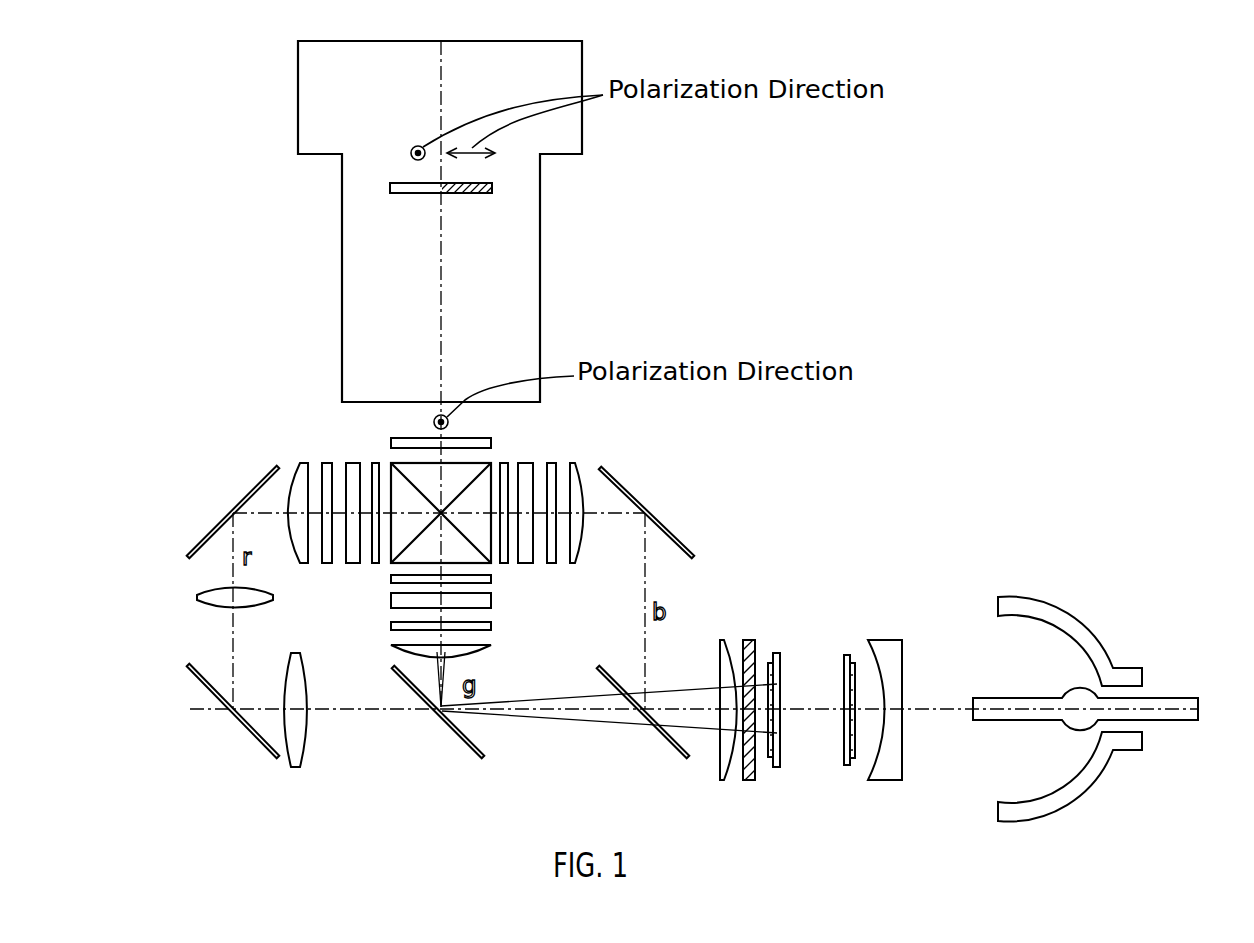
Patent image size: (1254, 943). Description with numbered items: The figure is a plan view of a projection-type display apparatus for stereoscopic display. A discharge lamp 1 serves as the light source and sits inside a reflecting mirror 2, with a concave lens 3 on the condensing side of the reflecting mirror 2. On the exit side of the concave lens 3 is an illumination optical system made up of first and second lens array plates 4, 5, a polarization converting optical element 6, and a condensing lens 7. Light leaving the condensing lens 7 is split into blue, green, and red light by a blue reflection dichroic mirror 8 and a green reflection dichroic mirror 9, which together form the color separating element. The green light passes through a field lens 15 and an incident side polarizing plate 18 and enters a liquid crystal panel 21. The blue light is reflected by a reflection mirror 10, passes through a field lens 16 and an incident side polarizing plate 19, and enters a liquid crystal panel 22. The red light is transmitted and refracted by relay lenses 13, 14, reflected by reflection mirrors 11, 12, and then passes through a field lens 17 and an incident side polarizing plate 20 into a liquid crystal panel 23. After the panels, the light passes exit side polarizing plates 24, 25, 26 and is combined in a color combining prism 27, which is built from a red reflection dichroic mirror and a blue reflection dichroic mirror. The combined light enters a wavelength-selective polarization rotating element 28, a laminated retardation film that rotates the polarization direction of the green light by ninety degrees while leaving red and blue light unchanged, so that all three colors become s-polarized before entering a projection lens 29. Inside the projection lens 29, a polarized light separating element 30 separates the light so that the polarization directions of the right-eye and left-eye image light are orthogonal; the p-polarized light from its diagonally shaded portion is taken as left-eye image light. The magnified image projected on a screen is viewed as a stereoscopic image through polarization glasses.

The discharge lamp 1 is at (1168, 698).
The reflecting mirror 2 is at (1098, 777).
The concave lens 3 is at (904, 764).
The first lens array plate 4 is at (847, 655).
The second lens array plate 5 is at (777, 653).
The polarization converting optical element 6 is at (755, 770).
The condensing lens 7 is at (722, 640).
The blue reflection dichroic mirror 8 is at (667, 742).
The green reflection dichroic mirror 9 is at (460, 742).
The reflection mirror 10 is at (670, 533).
The reflection mirror 11 is at (195, 680).
The reflection mirror 12 is at (212, 536).
The relay lens 13 is at (307, 737).
The relay lens 14 is at (197, 596).
The field lens 15 is at (491, 650).
The field lens 16 is at (583, 548).
The field lens 17 is at (303, 463).
The incident side polarizing plate 18 is at (492, 627).
The incident side polarizing plate 19 is at (553, 463).
The incident side polarizing plate 20 is at (325, 463).
The liquid crystal panel 21 is at (391, 602).
The liquid crystal panel 22 is at (528, 463).
The liquid crystal panel 23 is at (352, 563).
The exit side polarizing plate 24 is at (492, 582).
The exit side polarizing plate 25 is at (503, 563).
The exit side polarizing plate 26 is at (376, 563).
The color combining prism 27 is at (390, 463).
The wavelength-selective polarization rotating element 28 is at (490, 443).
The projection lens 29 is at (538, 292).
The polarized light separating element 30 is at (390, 188).